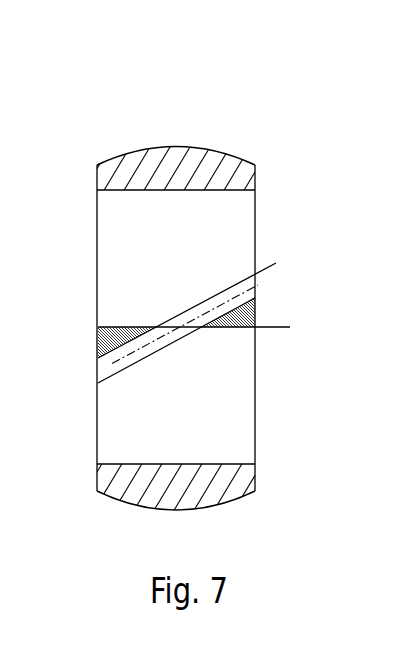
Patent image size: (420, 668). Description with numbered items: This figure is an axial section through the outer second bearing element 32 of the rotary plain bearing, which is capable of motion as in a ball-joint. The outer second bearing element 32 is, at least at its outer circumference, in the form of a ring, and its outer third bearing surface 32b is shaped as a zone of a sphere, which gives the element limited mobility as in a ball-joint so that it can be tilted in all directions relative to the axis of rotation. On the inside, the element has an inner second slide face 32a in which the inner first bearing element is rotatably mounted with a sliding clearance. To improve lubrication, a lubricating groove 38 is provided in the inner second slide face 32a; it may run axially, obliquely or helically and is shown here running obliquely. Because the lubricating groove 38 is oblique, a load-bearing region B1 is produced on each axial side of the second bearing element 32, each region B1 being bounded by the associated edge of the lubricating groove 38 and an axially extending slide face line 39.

The outer second bearing element 32 is at (195, 290).
The inner second slide face 32a is at (244, 192).
The outer third bearing surface 32b is at (157, 140).
The lubricating groove 38 is at (105, 373).
The axially extending slide face line 39 is at (283, 330).
The load-bearing region B1 is at (98, 338).